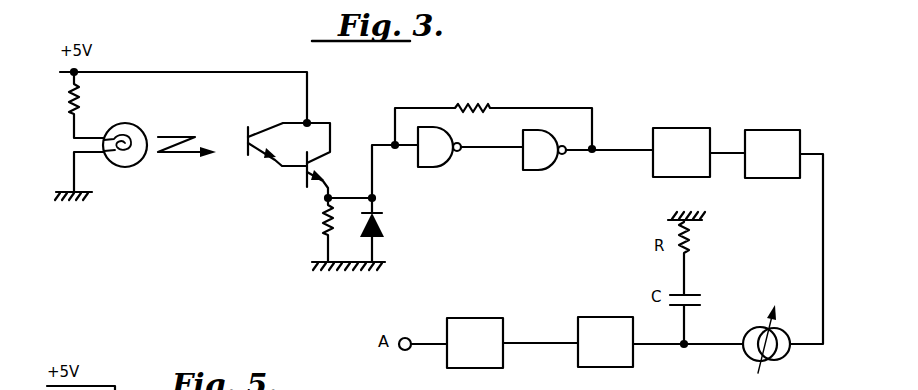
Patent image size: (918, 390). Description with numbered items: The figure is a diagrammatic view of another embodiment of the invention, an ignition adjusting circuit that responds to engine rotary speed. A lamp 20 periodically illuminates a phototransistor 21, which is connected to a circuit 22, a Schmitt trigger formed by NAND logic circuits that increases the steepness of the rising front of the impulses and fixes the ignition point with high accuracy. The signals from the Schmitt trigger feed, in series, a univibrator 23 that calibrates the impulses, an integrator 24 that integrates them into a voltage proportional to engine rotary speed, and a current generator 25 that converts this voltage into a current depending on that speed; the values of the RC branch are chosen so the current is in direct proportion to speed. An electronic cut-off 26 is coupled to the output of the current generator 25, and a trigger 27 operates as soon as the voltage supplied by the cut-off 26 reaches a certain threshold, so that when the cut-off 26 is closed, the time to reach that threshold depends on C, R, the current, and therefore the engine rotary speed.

The lamp 20 is at (122, 167).
The phototransistor 21 is at (247, 149).
The circuit 22 is at (497, 154).
The univibrator 23 is at (681, 152).
The integrator 24 is at (772, 154).
The current generator 25 is at (752, 337).
The electronic cut-off 26 is at (605, 342).
The trigger 27 is at (475, 343).